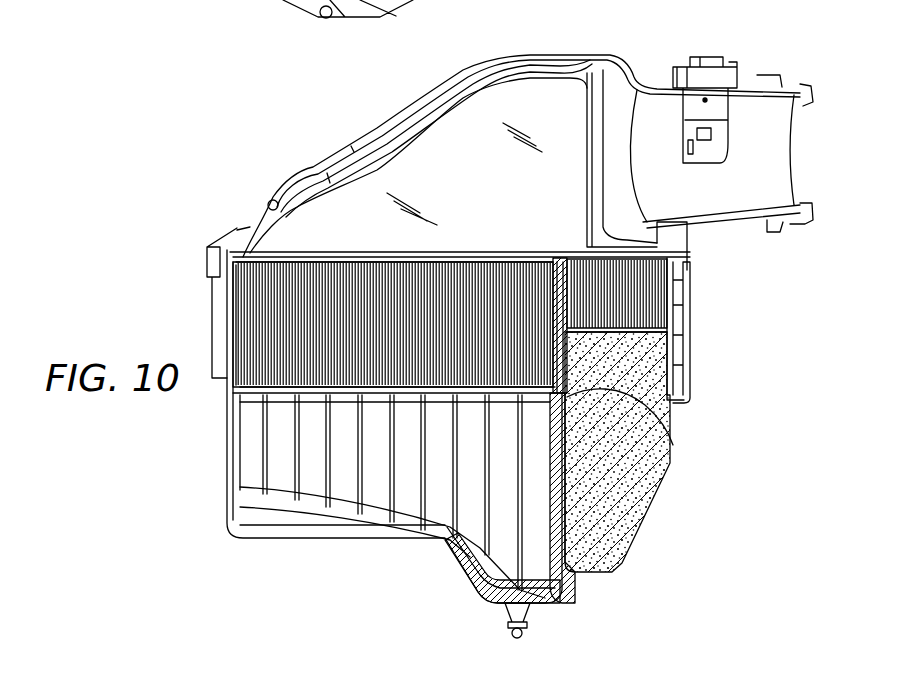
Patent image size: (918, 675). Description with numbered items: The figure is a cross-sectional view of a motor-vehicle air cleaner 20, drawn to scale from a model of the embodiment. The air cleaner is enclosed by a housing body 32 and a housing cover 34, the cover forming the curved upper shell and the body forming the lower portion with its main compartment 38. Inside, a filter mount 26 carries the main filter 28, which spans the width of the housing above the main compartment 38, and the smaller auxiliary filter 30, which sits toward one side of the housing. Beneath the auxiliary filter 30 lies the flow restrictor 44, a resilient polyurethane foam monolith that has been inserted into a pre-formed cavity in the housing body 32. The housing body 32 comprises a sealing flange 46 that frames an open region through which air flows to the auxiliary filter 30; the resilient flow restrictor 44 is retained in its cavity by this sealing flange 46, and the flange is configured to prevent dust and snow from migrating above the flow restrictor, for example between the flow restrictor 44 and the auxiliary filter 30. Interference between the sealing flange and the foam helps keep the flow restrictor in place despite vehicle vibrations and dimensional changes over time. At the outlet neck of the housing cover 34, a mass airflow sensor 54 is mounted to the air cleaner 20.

The air cleaner 20 is at (174, 164).
The filter mount 26 is at (452, 240).
The main filter 28 is at (414, 335).
The auxiliary filter 30 is at (630, 305).
The housing body 32 is at (226, 428).
The housing cover 34 is at (355, 150).
The main compartment 38 is at (412, 473).
The flow restrictor 44 is at (607, 461).
The sealing flange 46 is at (602, 392).
The mass airflow sensor 54 is at (702, 44).